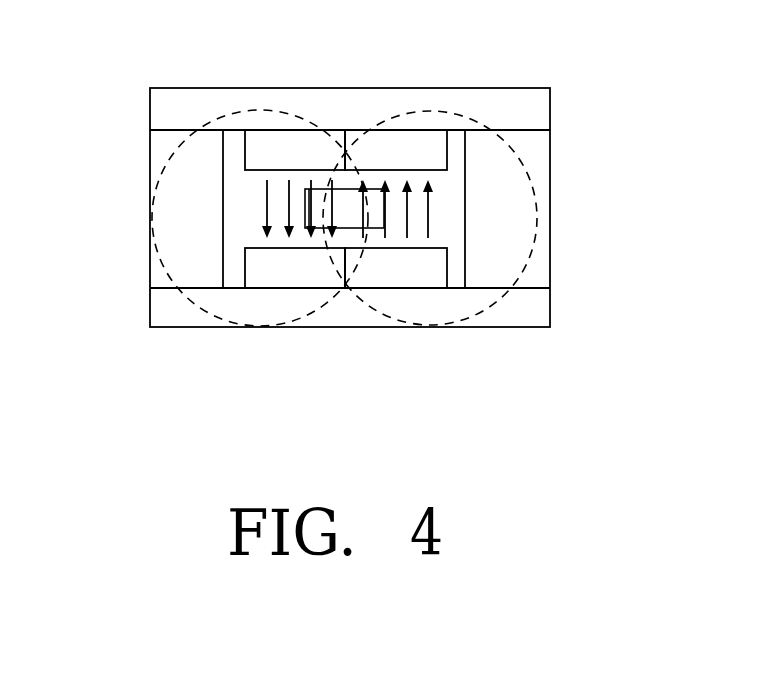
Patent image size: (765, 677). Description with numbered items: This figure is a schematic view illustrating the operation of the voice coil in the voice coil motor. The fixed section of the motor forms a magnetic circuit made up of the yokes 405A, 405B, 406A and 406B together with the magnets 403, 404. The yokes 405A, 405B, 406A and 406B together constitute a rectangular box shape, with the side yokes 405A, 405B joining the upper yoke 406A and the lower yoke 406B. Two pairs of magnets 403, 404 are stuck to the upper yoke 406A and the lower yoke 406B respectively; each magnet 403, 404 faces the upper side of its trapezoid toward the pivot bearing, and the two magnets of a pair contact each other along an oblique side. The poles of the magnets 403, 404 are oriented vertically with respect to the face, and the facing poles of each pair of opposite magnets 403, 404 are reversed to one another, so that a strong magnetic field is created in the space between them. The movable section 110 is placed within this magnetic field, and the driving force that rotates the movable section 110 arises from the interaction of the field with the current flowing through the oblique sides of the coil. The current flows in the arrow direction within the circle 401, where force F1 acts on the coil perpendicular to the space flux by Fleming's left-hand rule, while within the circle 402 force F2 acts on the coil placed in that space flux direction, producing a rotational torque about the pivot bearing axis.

The movable section 110 is at (352, 218).
The circle 401 is at (234, 115).
The circle 402 is at (492, 305).
The magnet 403 is at (262, 146).
The magnet 404 is at (438, 144).
The yoke 405A is at (163, 153).
The yoke 405B is at (540, 152).
The upper yoke 406A is at (168, 100).
The lower yoke 406B is at (173, 330).